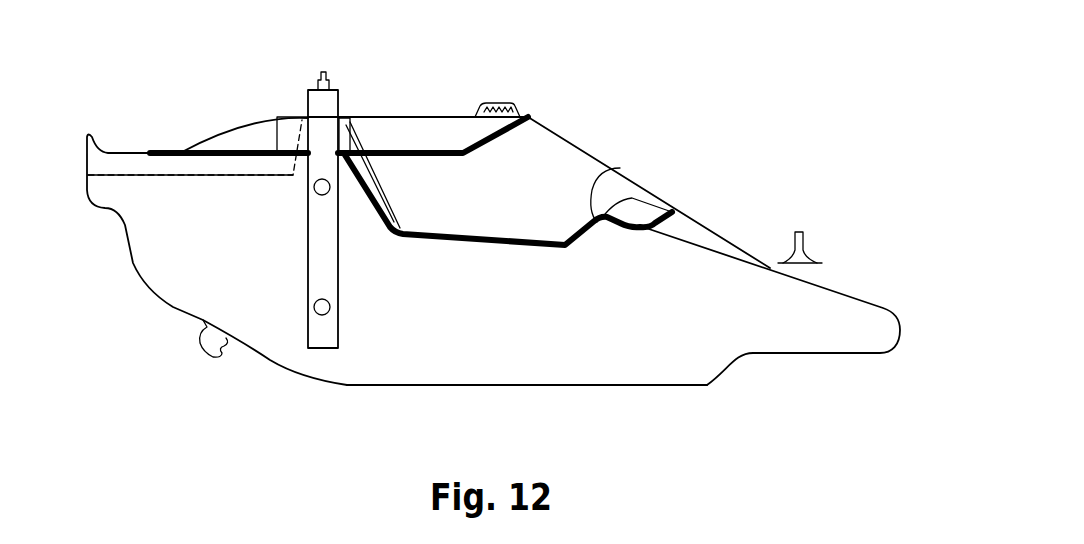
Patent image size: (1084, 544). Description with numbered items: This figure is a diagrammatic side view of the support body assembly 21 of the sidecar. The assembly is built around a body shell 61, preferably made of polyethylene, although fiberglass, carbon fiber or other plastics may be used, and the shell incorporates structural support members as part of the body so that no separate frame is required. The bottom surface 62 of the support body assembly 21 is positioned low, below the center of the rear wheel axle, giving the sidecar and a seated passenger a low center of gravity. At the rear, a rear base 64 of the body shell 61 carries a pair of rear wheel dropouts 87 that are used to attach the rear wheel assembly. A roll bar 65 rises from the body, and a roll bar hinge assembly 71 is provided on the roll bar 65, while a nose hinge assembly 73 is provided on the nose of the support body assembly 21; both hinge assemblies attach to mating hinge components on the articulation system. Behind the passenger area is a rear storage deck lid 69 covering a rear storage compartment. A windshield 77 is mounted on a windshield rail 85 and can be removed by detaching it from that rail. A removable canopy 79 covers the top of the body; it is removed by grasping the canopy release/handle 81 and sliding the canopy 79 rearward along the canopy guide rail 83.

The support body assembly 21 is at (590, 461).
The body shell 61 is at (697, 360).
The bottom surface 62 is at (437, 387).
The rear base 64 is at (173, 307).
The roll bar 65 is at (340, 102).
The rear storage deck lid 69 is at (122, 163).
The roll bar hinge assembly 71 is at (323, 70).
The nose hinge assembly 73 is at (803, 230).
The windshield 77 is at (597, 160).
The removable canopy 79 is at (437, 117).
The canopy release/handle 81 is at (513, 103).
The canopy guide rail 83 is at (252, 150).
The windshield rail 85 is at (620, 168).
The rear wheel dropouts 87 is at (208, 357).